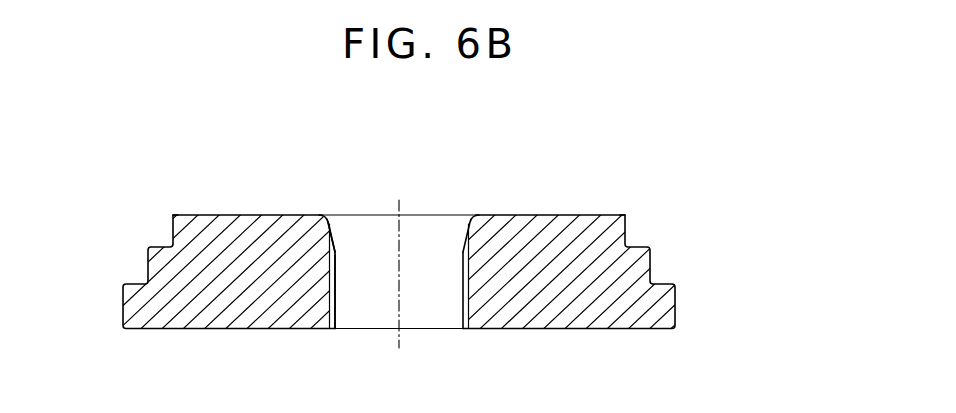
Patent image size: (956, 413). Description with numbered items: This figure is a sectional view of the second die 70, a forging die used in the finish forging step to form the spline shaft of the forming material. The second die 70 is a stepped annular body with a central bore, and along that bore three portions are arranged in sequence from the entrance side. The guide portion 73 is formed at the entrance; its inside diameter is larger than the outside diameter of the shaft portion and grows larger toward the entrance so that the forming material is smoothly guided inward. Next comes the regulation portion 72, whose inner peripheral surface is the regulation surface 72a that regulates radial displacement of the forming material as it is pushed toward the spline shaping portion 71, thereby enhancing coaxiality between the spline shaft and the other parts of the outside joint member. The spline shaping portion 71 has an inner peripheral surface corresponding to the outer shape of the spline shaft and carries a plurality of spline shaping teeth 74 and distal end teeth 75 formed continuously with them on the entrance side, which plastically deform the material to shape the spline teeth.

The second die 70 is at (689, 143).
The spline shaping portion 71 is at (452, 311).
The regulation portion 72 is at (398, 223).
The regulation surface 72a is at (469, 235).
The guide portion 73 is at (475, 215).
The spline shaping teeth 74 is at (347, 271).
The distal end teeth 75 is at (336, 239).